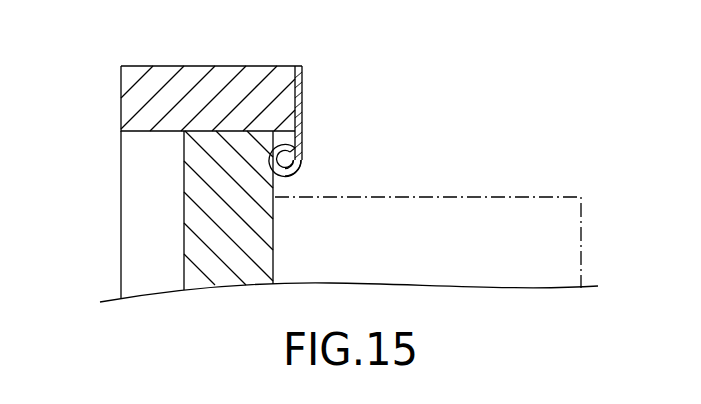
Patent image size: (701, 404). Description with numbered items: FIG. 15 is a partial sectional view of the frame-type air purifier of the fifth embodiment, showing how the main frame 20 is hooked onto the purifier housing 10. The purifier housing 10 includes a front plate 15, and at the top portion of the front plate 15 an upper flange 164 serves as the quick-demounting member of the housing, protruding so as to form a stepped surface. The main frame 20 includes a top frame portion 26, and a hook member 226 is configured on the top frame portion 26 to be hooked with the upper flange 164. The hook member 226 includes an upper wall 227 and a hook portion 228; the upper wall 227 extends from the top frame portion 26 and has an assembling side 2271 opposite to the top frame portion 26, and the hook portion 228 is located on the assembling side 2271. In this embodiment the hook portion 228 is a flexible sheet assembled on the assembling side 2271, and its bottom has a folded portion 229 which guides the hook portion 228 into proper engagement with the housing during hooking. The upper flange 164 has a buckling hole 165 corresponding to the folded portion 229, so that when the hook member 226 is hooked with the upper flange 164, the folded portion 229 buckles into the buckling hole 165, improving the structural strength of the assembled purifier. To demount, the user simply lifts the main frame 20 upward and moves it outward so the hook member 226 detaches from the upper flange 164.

The purifier housing 10 is at (575, 158).
The front plate 15 is at (205, 255).
The main frame 20 is at (115, 218).
The top frame portion 26 is at (130, 95).
The upper flange 164 is at (210, 160).
The buckling hole 165 is at (300, 176).
The hook member 226 is at (309, 65).
The upper wall 227 is at (228, 78).
The assembling side 2271 is at (302, 89).
The hook portion 228 is at (302, 121).
The folded portion 229 is at (301, 154).